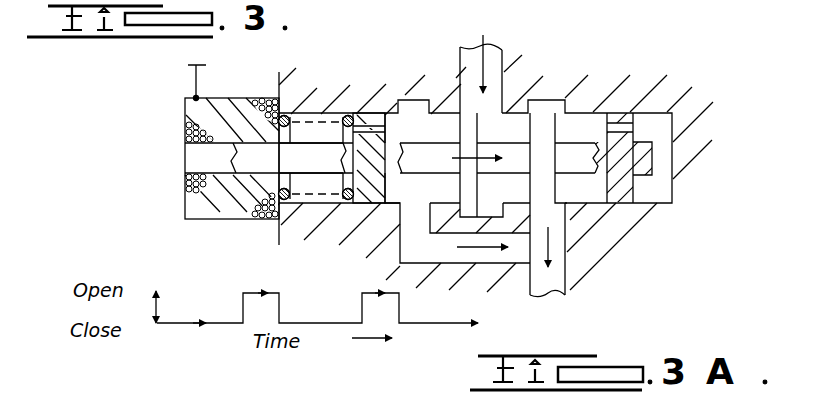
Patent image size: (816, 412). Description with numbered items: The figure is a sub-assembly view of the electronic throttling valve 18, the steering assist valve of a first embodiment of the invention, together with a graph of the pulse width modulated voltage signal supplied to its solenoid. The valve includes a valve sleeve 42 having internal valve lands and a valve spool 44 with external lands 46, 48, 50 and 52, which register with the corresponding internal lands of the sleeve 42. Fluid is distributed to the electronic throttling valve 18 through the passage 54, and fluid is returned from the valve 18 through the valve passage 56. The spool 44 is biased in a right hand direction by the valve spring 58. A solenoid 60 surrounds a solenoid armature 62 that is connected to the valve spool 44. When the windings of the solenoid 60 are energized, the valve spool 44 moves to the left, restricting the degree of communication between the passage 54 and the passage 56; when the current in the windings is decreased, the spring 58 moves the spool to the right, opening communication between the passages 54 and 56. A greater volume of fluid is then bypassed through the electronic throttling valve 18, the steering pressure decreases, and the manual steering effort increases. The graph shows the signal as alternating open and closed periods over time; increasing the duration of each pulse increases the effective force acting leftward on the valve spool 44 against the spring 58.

The electronic throttling valve 18 is at (402, 94).
The valve sleeve 42 is at (588, 92).
The valve spool 44 is at (422, 155).
The external land 46 is at (351, 217).
The external land 48 is at (470, 188).
The external land 50 is at (537, 188).
The external land 52 is at (633, 197).
The passage 54 is at (490, 65).
The valve passage 56 is at (552, 280).
The valve spring 58 is at (291, 118).
The solenoid 60 is at (207, 114).
The solenoid armature 62 is at (255, 153).